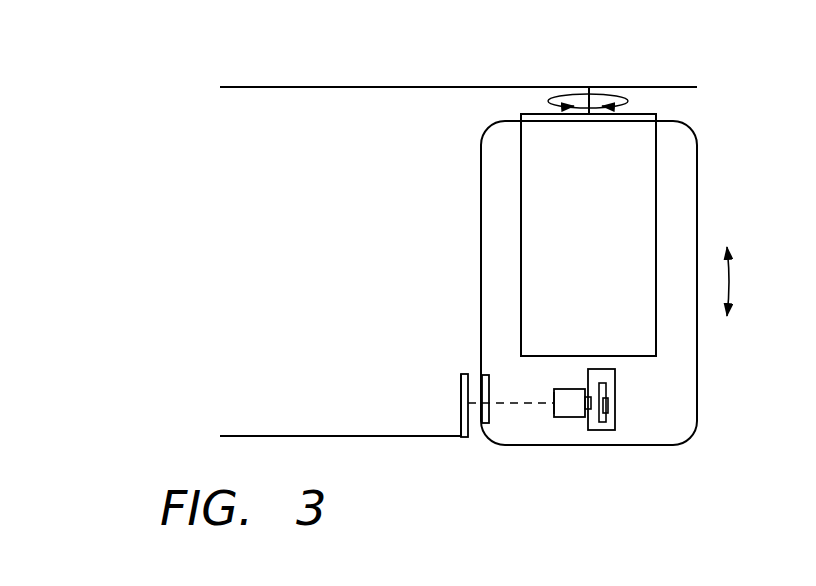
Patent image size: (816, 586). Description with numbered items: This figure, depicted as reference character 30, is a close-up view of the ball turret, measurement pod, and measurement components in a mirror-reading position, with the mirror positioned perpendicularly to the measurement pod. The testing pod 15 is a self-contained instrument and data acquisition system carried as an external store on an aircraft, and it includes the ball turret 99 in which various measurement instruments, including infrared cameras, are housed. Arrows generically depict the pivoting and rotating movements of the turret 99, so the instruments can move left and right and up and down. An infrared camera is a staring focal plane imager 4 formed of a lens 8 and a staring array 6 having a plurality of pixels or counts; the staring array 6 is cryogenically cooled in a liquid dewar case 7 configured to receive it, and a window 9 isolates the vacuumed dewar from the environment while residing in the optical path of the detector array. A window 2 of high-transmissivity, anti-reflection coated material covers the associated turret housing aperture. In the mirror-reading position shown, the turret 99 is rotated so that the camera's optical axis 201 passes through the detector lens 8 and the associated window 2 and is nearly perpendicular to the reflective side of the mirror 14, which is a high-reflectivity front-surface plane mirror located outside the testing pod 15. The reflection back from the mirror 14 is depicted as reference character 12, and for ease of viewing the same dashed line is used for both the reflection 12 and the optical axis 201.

The testing pod 15 is at (389, 87).
The close-up view of ball turret and measurement pod 30 is at (190, 135).
The ball turret 99 is at (458, 194).
The mirror 14 is at (461, 417).
The window 2 is at (468, 385).
The optical axis 201 is at (508, 403).
The reflection back from the mirror 12 is at (518, 404).
The window 9 is at (574, 389).
The lens 8 is at (554, 397).
The staring focal plane imager 4 is at (566, 424).
The liquid dewar case 7 is at (603, 369).
The staring array 6 is at (607, 388).